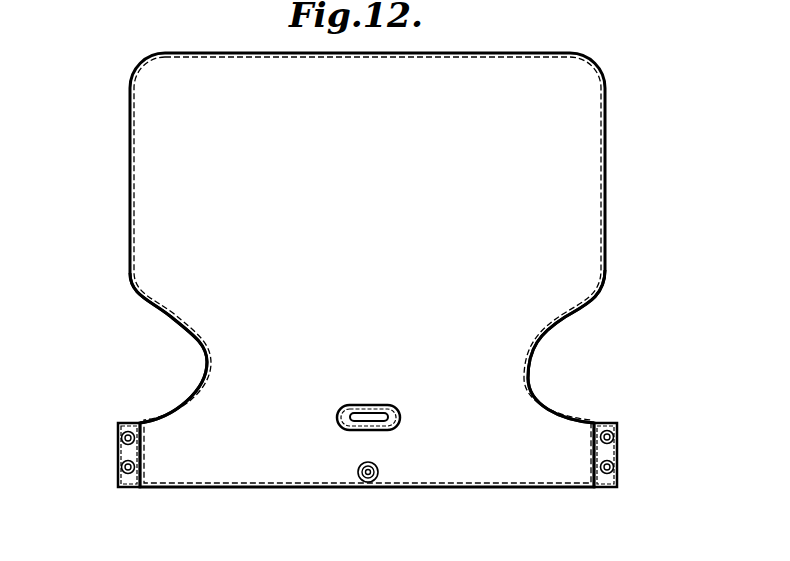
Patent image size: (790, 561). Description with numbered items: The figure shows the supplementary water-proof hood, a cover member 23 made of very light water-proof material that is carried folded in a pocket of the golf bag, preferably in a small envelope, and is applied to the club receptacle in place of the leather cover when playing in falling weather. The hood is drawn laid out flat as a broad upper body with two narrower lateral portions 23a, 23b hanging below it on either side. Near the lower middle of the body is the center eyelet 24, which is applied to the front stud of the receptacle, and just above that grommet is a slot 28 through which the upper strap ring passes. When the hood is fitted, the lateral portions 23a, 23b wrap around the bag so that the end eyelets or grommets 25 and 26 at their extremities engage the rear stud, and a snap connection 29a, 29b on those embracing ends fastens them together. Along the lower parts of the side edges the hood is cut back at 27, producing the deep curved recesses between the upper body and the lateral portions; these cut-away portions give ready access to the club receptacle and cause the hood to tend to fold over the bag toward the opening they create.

The cover member 23 is at (460, 202).
The lateral portion 23a is at (565, 440).
The lateral portion 23b is at (172, 437).
The center eyelet 24 is at (369, 483).
The end eyelet 25 is at (614, 468).
The end eyelet 26 is at (121, 468).
The cut back portion 27 is at (163, 313).
The slot 28 is at (369, 416).
The snap connection 29a is at (614, 436).
The snap connection 29b is at (121, 438).